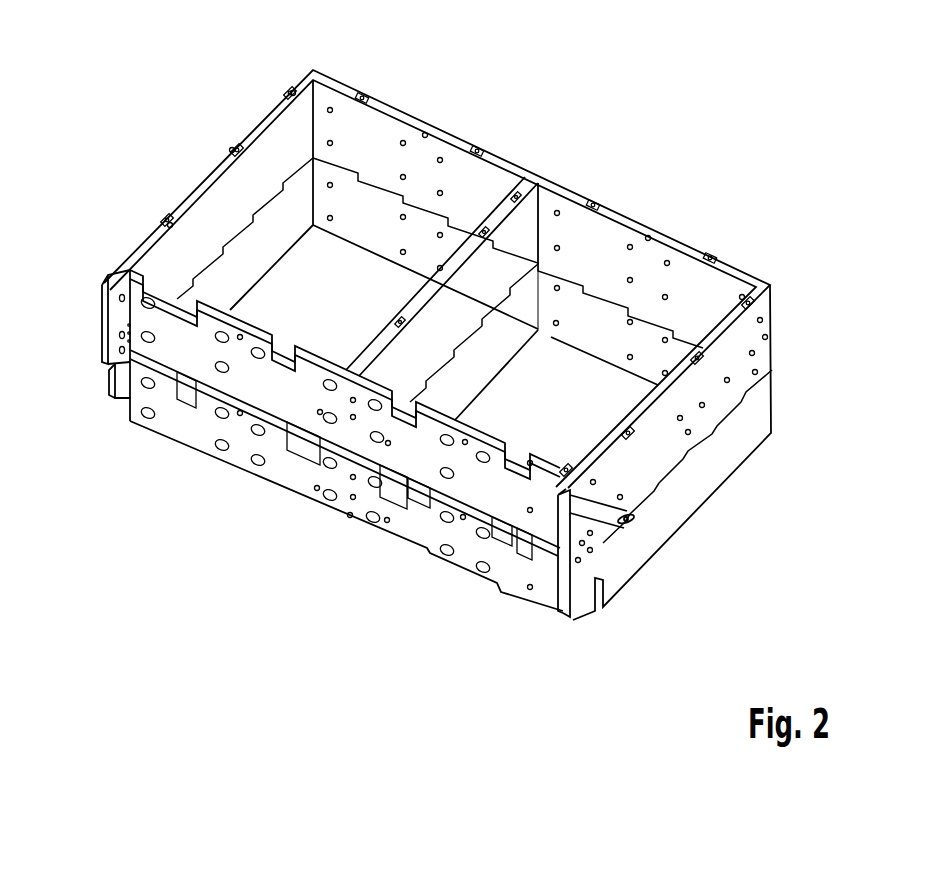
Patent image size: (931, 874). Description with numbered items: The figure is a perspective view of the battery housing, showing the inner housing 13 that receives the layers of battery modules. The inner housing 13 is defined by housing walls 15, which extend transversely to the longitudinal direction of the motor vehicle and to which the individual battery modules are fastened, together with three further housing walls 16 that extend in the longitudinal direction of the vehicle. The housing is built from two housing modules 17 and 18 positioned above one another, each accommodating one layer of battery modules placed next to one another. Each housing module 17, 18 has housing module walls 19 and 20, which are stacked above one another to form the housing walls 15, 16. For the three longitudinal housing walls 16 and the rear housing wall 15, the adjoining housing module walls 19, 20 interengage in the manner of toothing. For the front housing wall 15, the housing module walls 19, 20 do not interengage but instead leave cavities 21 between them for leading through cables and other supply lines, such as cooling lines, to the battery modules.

The inner housing 13 is at (652, 185).
The housing wall 15 is at (463, 53).
The housing wall 16 is at (233, 97).
The housing module 17 is at (92, 327).
The housing module 18 is at (115, 403).
The housing module wall 19 is at (425, 178).
The housing module wall 20 is at (368, 198).
The cavity 21 is at (182, 390).